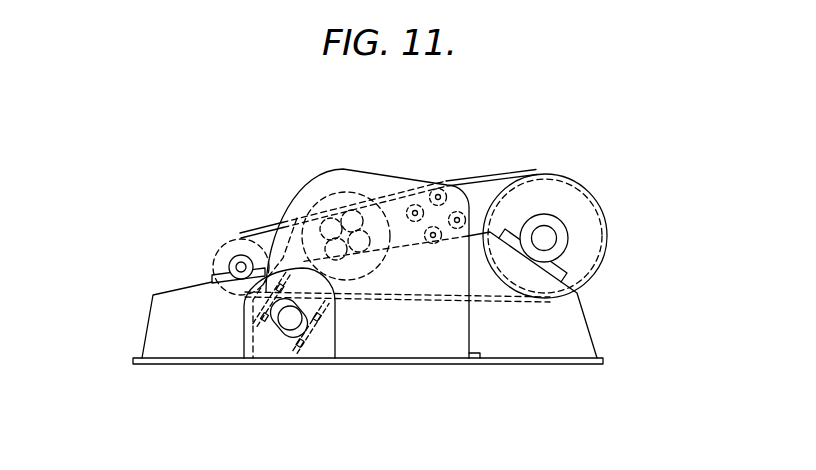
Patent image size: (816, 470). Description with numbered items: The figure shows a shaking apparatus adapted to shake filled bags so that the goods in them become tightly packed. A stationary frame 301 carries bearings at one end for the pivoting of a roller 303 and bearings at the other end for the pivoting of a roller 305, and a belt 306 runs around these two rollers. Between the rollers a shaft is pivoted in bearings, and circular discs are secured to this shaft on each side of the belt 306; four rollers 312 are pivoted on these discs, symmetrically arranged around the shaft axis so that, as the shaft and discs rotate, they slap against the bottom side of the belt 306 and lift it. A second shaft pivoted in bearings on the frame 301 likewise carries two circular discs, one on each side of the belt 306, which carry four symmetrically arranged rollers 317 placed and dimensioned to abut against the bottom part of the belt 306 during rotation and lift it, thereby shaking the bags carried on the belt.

The stationary frame 301 is at (588, 315).
The roller 303 is at (586, 193).
The roller 305 is at (223, 248).
The belt 306 is at (472, 182).
The rollers 312 is at (350, 212).
The rollers 317 is at (433, 190).